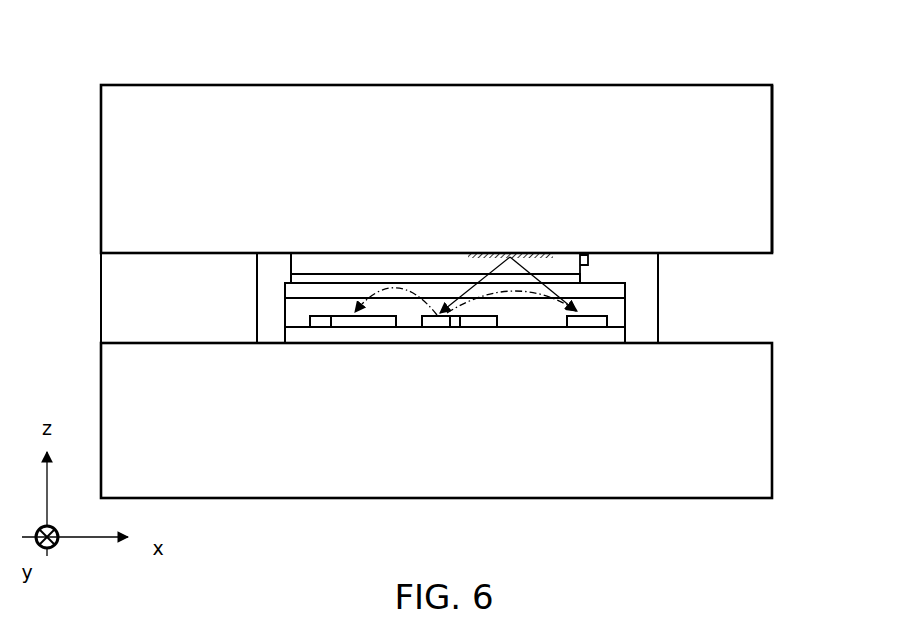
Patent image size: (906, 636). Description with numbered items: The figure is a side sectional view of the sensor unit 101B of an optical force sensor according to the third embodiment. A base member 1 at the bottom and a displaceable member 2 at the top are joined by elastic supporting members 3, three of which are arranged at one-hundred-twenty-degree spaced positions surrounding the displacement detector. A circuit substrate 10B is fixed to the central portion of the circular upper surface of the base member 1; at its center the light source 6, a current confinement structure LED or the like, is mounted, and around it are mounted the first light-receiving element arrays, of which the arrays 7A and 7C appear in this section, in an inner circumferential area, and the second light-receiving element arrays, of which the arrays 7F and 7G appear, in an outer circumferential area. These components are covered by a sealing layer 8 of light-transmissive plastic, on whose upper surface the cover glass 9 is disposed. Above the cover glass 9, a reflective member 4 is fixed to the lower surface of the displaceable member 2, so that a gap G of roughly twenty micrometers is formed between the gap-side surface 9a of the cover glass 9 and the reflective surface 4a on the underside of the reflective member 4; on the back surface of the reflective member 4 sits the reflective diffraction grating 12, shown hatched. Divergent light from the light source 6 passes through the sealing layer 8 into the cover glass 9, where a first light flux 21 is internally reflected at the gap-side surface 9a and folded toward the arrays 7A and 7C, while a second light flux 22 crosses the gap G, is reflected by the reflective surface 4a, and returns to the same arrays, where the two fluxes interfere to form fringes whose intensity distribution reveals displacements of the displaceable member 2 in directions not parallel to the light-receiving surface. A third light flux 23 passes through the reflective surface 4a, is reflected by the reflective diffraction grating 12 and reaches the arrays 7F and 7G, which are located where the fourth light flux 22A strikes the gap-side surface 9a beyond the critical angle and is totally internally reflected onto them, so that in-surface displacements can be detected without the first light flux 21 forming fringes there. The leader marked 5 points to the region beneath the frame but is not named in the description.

The base member 1 is at (277, 492).
The displaceable member 2 is at (562, 83).
The sensor unit 101B is at (737, 78).
The elastic supporting member 3 is at (97, 300).
The gap G is at (284, 273).
The reflective member 4 is at (582, 254).
The reflective surface 4a is at (577, 276).
The adhesive layer 5 is at (300, 343).
The light source 6 is at (437, 327).
The light-receiving element array 7A is at (473, 327).
The light-receiving element array 7C is at (340, 327).
The light-receiving element array 7F is at (314, 327).
The light-receiving element array 7G is at (592, 327).
The sealing layer 8 is at (626, 312).
The cover glass 9 is at (626, 291).
The gap-side surface 9a is at (607, 283).
The circuit substrate 10B is at (627, 338).
The reflective diffraction grating 12 is at (508, 255).
The first light flux 21 is at (373, 327).
The second light flux 22 is at (375, 316).
The second light flux (fourth light flux) 22A is at (540, 327).
The third light flux 23 is at (463, 298).